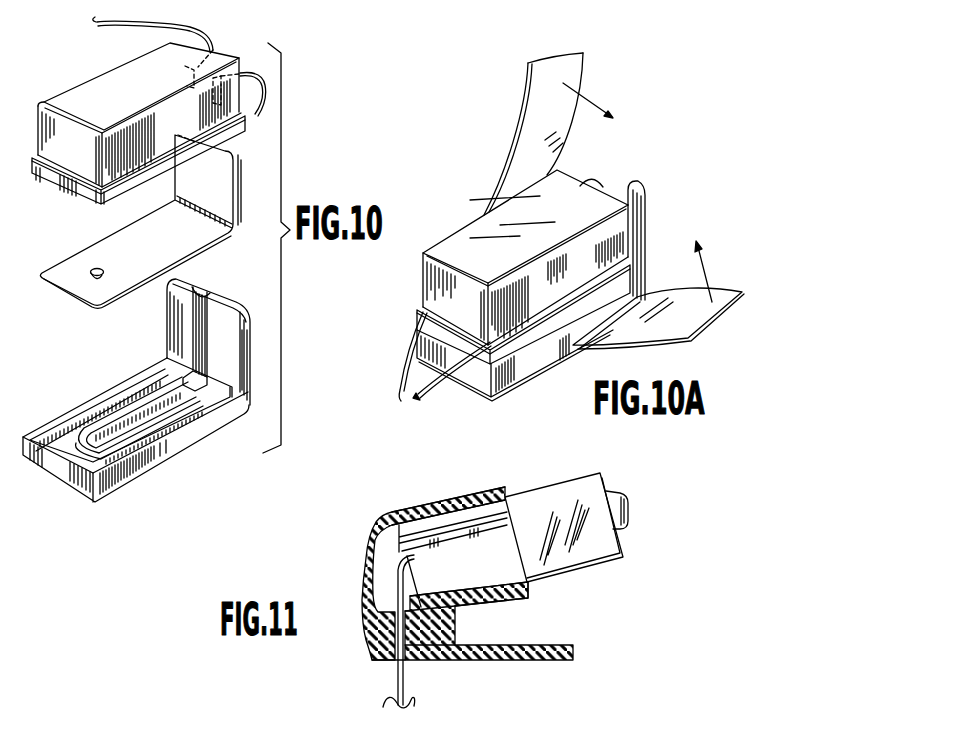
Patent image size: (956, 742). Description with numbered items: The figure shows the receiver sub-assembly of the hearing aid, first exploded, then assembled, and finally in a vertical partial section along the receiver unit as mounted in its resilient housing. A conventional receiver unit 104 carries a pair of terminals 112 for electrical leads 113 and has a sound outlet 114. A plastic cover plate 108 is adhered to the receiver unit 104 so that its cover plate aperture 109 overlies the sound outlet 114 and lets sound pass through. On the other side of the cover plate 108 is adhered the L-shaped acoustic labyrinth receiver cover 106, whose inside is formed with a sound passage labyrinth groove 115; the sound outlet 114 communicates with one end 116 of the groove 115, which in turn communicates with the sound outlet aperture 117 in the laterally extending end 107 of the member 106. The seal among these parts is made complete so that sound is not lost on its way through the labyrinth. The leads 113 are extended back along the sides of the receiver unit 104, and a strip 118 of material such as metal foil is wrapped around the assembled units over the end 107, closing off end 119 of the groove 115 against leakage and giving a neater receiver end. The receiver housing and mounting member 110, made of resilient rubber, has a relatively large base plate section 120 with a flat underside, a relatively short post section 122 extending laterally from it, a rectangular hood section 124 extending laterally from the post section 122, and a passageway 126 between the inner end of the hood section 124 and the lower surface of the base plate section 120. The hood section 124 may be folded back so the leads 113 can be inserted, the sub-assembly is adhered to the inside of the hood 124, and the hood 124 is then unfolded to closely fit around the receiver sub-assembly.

In FIG. 10, the receiver unit 104 is at (82, 74).
In FIG. 10A, the receiver unit 104 is at (452, 239).
In FIG. 10, the acoustic labyrinth receiver cover 106 is at (163, 466).
In FIG. 10A, the acoustic labyrinth receiver cover 106 is at (532, 360).
In FIG. 10, the laterally extending end 107 is at (252, 320).
In FIG. 10A, the laterally extending end 107 is at (646, 254).
In FIG. 11, the laterally extending end 107 is at (628, 540).
In FIG. 10, the cover plate 108 is at (90, 290).
In FIG. 10A, the cover plate 108 is at (508, 400).
In FIG. 10, the cover plate aperture 109 is at (100, 283).
In FIG. 11, the receiver housing and mounting member 110 is at (363, 589).
In FIG. 10, the terminals 112 is at (213, 100).
In FIG. 10, the electrical leads 113 is at (253, 66).
In FIG. 10A, the electrical leads 113 is at (425, 397).
In FIG. 11, the electrical leads 113 is at (389, 709).
In FIG. 10, the sound outlet 114 is at (92, 163).
In FIG. 10A, the sound outlet 114 is at (523, 314).
In FIG. 10, the sound passage labyrinth groove 115 is at (122, 427).
In FIG. 10, the end of labyrinth groove 116 is at (103, 440).
In FIG. 10, the sound outlet aperture 117 is at (200, 352).
In FIG. 10A, the strip 118 is at (668, 330).
In FIG. 11, the strip 118 is at (587, 558).
In FIG. 10, the end of labyrinth groove 119 is at (203, 290).
In FIG. 10A, the end of labyrinth groove 119 is at (593, 183).
In FIG. 11, the base plate section 120 is at (490, 658).
In FIG. 11, the post section 122 is at (446, 636).
In FIG. 11, the hood section 124 is at (513, 596).
In FIG. 11, the passageway 126 is at (370, 650).